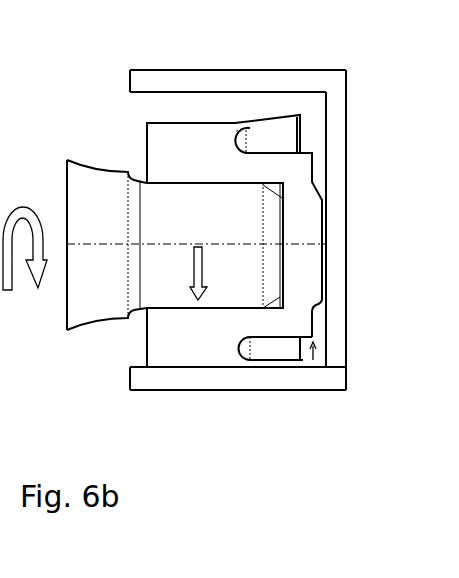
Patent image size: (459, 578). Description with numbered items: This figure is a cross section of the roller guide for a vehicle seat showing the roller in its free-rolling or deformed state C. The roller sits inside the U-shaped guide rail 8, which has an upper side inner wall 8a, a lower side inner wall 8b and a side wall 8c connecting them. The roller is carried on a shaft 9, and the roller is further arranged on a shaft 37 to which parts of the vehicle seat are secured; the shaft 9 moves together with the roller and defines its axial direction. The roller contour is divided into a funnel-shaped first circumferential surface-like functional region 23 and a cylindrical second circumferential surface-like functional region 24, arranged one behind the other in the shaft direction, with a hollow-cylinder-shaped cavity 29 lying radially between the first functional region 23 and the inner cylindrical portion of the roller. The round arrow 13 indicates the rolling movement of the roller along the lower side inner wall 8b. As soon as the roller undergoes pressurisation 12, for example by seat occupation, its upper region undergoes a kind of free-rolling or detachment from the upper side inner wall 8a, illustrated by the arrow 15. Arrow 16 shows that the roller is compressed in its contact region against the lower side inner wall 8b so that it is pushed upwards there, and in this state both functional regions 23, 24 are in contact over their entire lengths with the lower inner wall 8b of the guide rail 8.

The guide rail 8 is at (239, 258).
The upper side inner wall 8a is at (137, 95).
The lower side inner wall 8b is at (136, 370).
The side wall of housing 8c is at (328, 117).
The shaft 9 is at (63, 247).
The pressurisation 12 is at (204, 268).
The round arrow 13 is at (23, 205).
The arrow 15 is at (296, 104).
The arrow 16 is at (316, 353).
The first circumferential surface-like functional region 23 is at (272, 118).
The second circumferential surface-like functional region 24 is at (188, 122).
The cavity 29 is at (262, 353).
The shaft 37 is at (108, 308).
The deformed state C is at (110, 63).